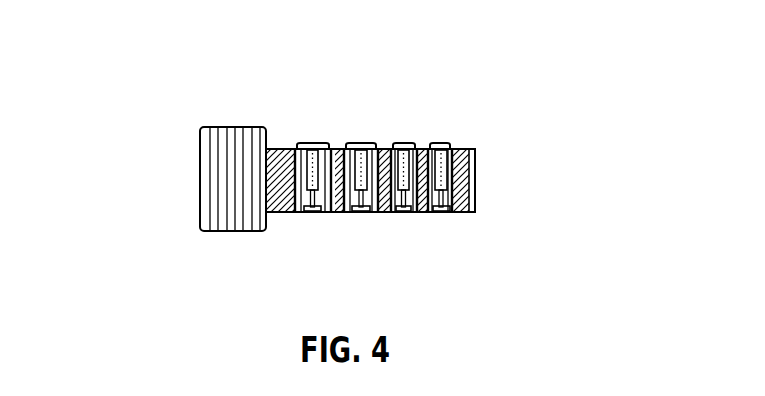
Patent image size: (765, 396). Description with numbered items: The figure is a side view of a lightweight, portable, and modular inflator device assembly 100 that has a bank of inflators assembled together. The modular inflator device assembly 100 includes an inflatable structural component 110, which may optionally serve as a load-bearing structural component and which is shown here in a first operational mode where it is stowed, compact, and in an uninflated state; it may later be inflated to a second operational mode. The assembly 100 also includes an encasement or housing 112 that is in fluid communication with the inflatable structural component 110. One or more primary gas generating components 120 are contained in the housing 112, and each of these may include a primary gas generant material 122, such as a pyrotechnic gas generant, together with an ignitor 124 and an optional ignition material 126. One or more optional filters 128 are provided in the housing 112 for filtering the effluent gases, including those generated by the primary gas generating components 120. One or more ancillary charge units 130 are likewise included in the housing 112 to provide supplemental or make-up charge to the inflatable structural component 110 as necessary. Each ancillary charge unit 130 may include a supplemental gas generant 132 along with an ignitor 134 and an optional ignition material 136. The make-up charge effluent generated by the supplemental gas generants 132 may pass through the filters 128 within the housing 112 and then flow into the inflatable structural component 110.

The modular inflator device assembly 100 is at (169, 91).
The inflatable structural component 110 is at (200, 180).
The housing 112 is at (477, 160).
The primary gas generating component 120 is at (311, 144).
The primary gas generant material 122 is at (298, 213).
The ignitor 124 is at (312, 213).
The ignition material 126 is at (360, 213).
The filter 128 is at (276, 146).
The ancillary charge unit 130 is at (401, 144).
The supplemental gas generant 132 is at (412, 213).
The ignitor 134 is at (438, 213).
The ignition material 136 is at (432, 177).